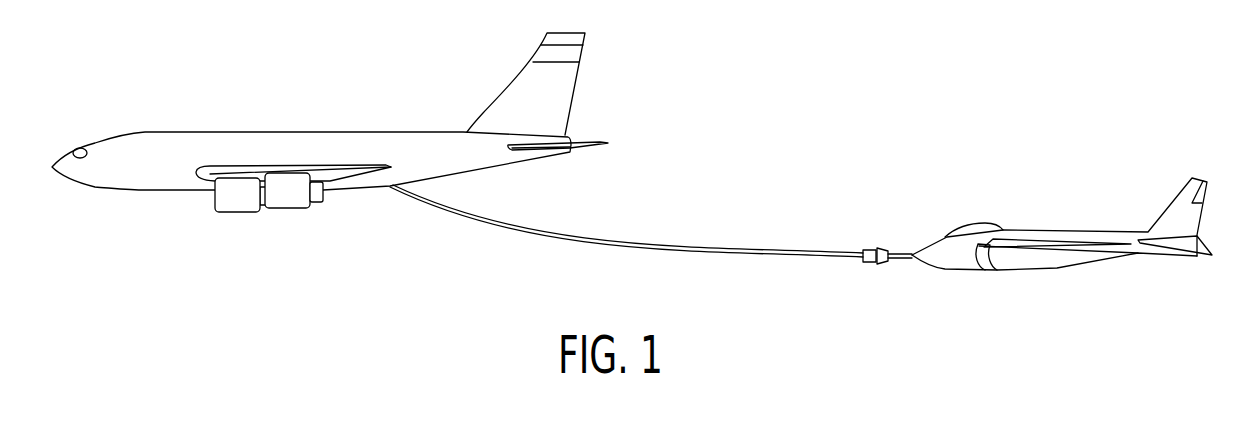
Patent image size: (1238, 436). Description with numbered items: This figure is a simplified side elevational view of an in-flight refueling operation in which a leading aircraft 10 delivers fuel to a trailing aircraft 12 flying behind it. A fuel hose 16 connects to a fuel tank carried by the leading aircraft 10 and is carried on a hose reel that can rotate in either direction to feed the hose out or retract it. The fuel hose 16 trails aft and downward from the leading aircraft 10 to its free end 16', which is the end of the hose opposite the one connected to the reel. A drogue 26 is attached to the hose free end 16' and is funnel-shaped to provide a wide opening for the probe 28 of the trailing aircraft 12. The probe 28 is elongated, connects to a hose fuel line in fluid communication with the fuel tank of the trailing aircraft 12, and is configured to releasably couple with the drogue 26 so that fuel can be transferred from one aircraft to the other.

The leading aircraft 10 is at (192, 131).
The trailing aircraft 12 is at (1062, 227).
The fuel hose 16 is at (626, 248).
The free end 16' is at (857, 285).
The drogue 26 is at (879, 265).
The probe 28 is at (900, 252).